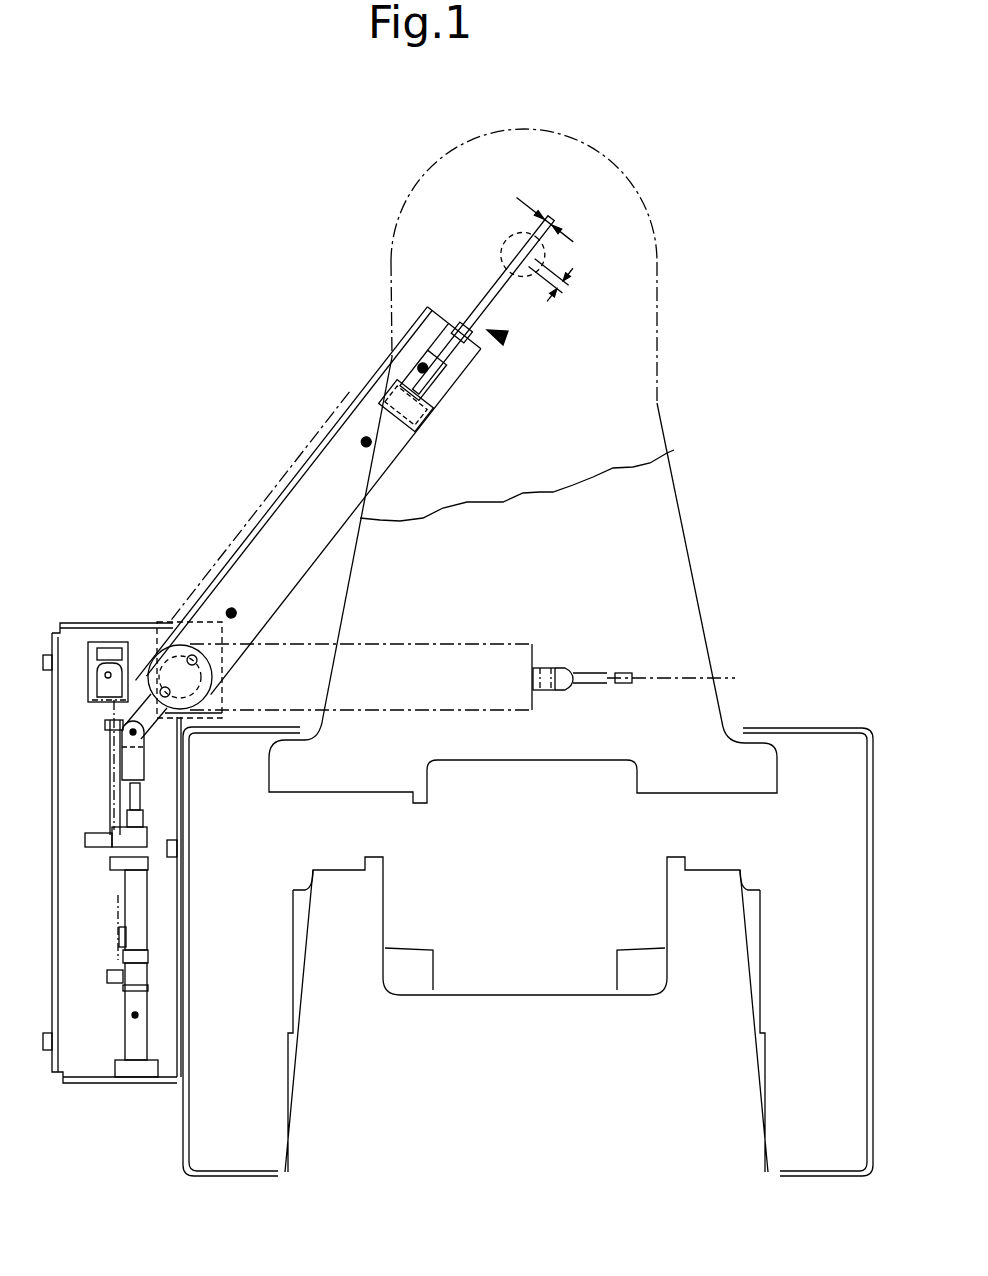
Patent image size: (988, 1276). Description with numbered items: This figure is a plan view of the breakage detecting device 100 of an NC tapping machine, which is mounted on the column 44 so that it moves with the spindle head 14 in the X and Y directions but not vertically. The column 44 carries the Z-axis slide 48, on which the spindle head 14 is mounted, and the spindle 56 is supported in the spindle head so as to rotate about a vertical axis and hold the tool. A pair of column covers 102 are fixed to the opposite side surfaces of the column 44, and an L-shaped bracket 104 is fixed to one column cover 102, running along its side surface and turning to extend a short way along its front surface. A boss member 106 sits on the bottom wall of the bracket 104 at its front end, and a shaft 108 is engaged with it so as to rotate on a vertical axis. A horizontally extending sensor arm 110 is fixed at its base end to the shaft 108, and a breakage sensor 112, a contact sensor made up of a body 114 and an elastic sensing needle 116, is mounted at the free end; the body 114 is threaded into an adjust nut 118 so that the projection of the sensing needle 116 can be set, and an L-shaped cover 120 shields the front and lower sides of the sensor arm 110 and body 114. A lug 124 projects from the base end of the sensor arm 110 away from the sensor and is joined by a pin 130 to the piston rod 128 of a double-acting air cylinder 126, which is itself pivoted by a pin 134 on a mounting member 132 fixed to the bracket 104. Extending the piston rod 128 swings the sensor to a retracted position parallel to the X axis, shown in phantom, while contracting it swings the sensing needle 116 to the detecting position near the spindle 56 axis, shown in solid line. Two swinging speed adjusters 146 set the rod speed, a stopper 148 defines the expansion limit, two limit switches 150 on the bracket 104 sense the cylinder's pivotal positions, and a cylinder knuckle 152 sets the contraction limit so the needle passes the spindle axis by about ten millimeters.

The spindle head 14 is at (664, 223).
The column 44 is at (762, 1068).
The Z-axis slide 48 is at (683, 556).
The spindle 56 is at (540, 253).
The breakage detecting device 100 is at (140, 572).
The column covers 102 is at (225, 1180).
The bracket 104 is at (90, 1087).
The boss member 106 is at (222, 729).
The shaft 108 is at (225, 680).
The sensor arm 110 is at (275, 577).
The breakage sensor 112 is at (505, 338).
The body 114 is at (460, 362).
The sensing needle 116 is at (487, 290).
The adjust nut 118 is at (430, 407).
The L-shaped cover 120 is at (473, 370).
The lug 124 is at (153, 728).
The air cylinder 126 is at (138, 898).
The piston rod 128 is at (133, 783).
The pin 130 is at (124, 748).
The mounting member 132 is at (152, 1066).
The pin 134 is at (137, 1016).
The swinging speed adjusters 146 is at (120, 838).
The stopper 148 is at (112, 650).
The limit switches 150 is at (123, 912).
The cylinder knuckle 152 is at (124, 787).